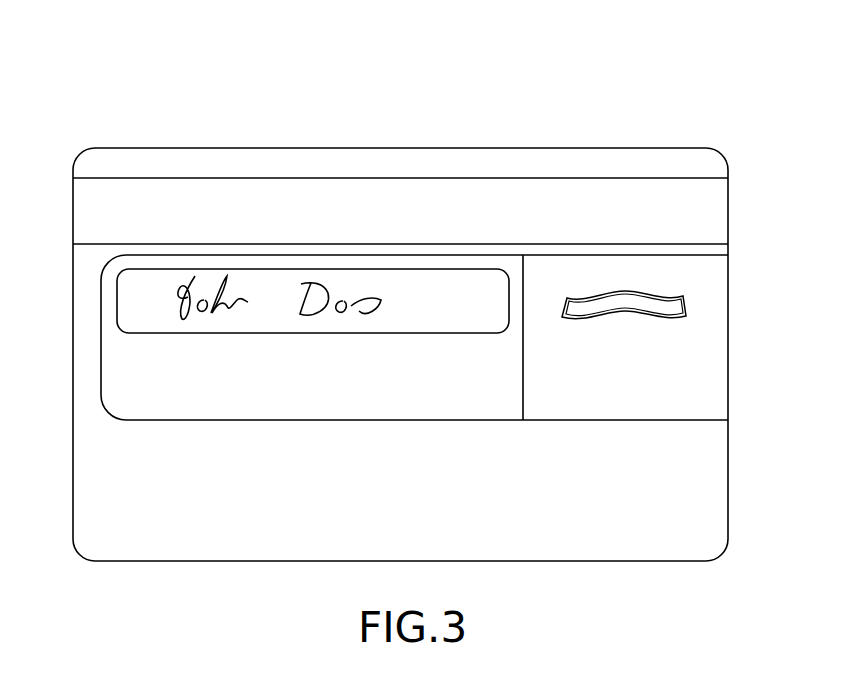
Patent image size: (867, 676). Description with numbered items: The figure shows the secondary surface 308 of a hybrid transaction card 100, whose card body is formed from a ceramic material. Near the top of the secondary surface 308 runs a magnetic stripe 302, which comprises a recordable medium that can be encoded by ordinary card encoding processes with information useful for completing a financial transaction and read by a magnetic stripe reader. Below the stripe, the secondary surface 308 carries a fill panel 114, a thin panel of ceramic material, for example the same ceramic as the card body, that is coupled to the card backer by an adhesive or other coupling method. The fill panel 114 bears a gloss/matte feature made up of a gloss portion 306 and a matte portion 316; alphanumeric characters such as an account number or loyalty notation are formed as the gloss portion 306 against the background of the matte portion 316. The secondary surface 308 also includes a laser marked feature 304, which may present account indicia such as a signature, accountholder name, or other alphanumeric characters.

The hybrid transaction card 100 is at (78, 104).
The magnetic stripe 302 is at (713, 213).
The fill panel 114 is at (730, 290).
The matte portion 316 is at (688, 308).
The gloss portion 306 is at (666, 341).
The laser marked feature 304 is at (483, 328).
The secondary surface 308 is at (634, 500).